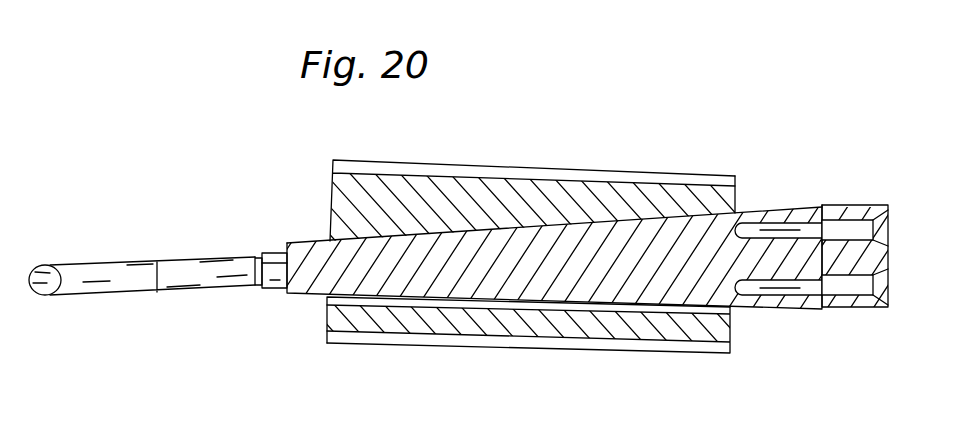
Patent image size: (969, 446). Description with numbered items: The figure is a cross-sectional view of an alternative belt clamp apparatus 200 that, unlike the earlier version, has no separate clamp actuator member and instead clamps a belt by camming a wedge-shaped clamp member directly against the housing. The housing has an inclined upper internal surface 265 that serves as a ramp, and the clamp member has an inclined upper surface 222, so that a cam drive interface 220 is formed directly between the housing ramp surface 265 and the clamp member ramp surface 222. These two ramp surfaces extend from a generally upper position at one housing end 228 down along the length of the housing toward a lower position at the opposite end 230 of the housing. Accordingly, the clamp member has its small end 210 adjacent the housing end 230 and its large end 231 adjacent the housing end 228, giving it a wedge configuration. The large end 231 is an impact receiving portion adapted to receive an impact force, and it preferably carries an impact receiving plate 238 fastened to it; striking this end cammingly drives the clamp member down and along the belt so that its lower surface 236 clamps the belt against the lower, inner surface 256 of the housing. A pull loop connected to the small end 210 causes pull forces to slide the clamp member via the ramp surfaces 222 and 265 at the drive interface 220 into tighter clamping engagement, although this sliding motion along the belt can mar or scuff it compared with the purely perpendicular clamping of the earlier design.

The belt clamp apparatus 200 is at (724, 114).
The small end 210 is at (318, 263).
The cam drive interface 220 is at (568, 212).
The upper surface 222 is at (460, 232).
The housing end 228 is at (738, 195).
The opposite end of the housing 230 is at (314, 198).
The large end 231 is at (803, 321).
The lower surface 236 is at (587, 301).
The impact receiving plate 238 is at (852, 310).
The lower, inner surface 256 is at (375, 305).
The upper internal surface 265 is at (327, 295).